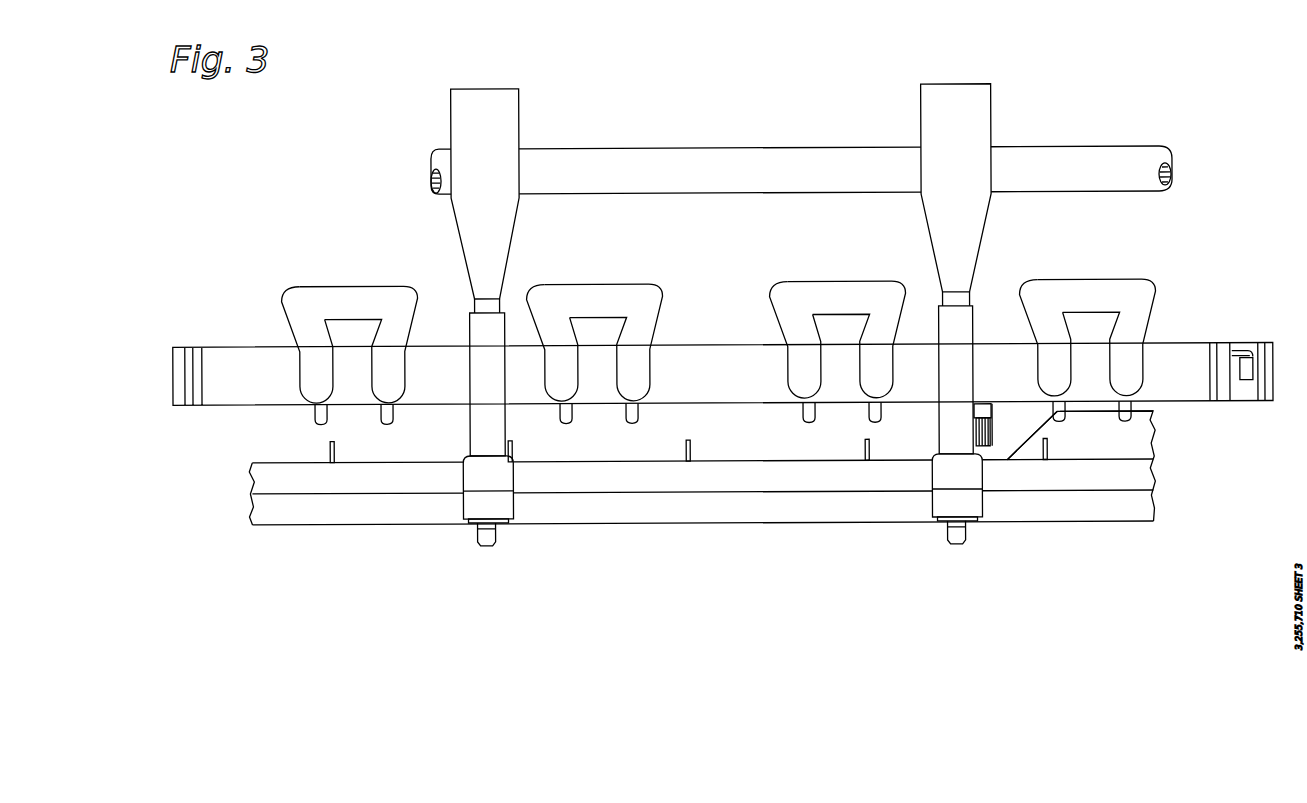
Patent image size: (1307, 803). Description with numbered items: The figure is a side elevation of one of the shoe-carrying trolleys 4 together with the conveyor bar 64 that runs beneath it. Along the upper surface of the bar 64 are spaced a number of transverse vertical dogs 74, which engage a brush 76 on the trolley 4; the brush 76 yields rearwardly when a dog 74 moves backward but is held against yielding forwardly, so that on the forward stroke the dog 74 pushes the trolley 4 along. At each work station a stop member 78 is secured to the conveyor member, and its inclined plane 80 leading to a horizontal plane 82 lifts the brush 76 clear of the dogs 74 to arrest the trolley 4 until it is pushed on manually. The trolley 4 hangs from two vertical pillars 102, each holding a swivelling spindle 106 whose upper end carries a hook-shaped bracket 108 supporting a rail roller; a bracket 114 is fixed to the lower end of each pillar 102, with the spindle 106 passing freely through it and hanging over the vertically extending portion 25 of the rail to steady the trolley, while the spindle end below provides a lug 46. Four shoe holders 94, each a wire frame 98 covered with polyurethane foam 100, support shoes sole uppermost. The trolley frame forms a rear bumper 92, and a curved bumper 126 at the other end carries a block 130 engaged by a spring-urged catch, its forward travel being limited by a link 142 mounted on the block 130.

The trolley 4 is at (223, 463).
The vertically extending portion of the rail 25 is at (766, 521).
The lug 46 is at (477, 539).
The bar 64 is at (764, 491).
The dog 74 is at (335, 444).
The brush 76 is at (991, 437).
The stop member 78 is at (1136, 452).
The inclined plane 80 is at (1016, 436).
The horizontal plane 82 is at (1146, 413).
The rear bumper 92 is at (173, 390).
The shoe holder 94 is at (412, 321).
The wire frame 98 is at (315, 413).
The polyurethane foam 100 is at (294, 323).
The pillar 102 is at (939, 421).
The spindle 106 is at (478, 304).
The hook-shaped bracket 108 is at (508, 118).
The bracket 114 is at (463, 480).
The curved bumper 126 is at (1262, 378).
The block 130 is at (1248, 372).
The link 142 is at (1238, 354).